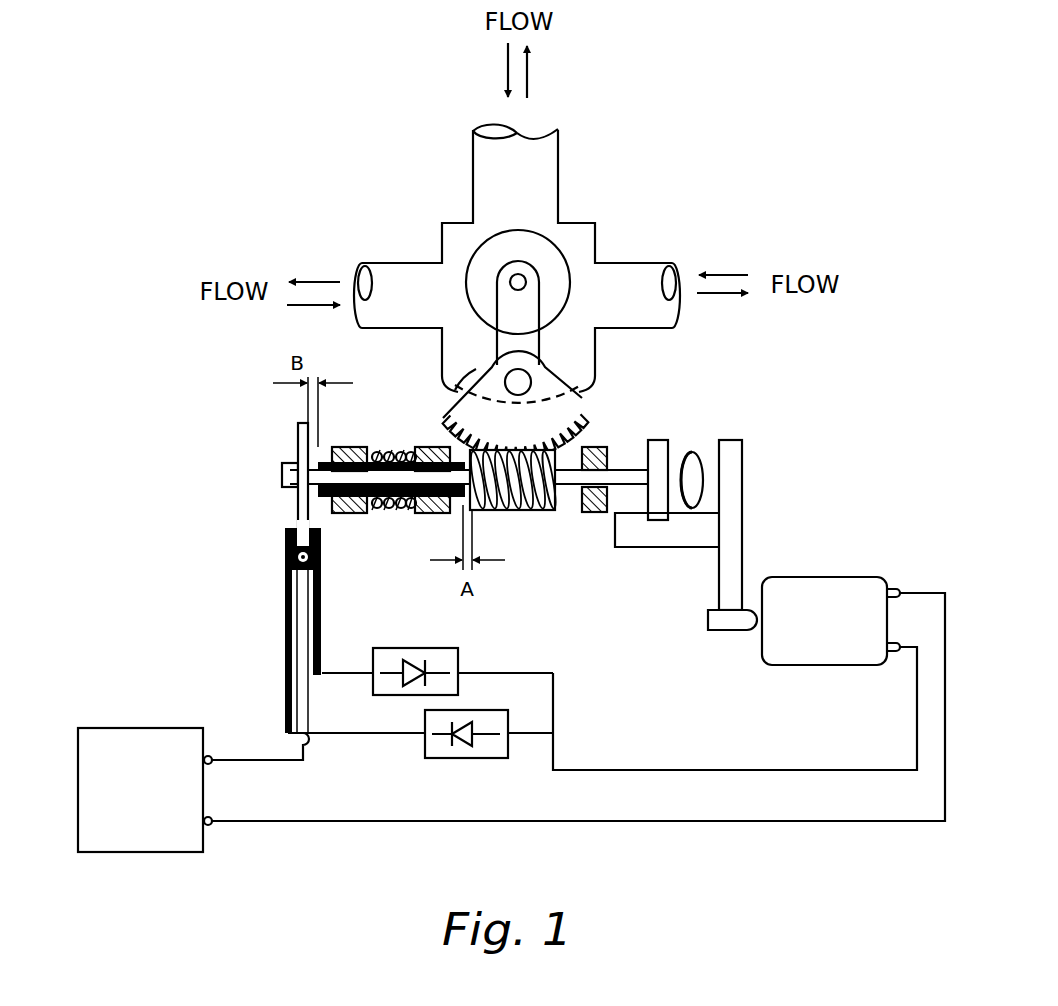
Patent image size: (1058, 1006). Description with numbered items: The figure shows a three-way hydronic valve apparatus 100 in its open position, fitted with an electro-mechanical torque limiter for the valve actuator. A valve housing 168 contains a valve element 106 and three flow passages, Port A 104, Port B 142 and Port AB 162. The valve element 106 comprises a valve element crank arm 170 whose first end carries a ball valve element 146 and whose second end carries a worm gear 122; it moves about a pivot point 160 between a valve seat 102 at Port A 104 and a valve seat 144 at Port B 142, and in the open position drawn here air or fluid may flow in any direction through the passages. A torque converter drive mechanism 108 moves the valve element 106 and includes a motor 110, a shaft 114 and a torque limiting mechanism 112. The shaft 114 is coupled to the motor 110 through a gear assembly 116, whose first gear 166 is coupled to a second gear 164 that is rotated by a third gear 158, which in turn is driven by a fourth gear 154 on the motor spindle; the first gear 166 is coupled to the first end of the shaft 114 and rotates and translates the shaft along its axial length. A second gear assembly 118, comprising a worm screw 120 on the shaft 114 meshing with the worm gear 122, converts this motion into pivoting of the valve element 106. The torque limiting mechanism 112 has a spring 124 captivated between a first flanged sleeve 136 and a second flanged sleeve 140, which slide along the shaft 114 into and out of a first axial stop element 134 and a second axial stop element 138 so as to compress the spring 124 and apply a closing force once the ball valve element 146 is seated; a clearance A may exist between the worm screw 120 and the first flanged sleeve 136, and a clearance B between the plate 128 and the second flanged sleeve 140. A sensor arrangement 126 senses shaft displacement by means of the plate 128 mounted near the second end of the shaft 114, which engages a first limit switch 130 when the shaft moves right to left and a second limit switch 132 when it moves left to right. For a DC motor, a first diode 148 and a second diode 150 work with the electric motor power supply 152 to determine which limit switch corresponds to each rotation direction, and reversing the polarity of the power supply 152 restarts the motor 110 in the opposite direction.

The three-way hydronic valve apparatus 100 is at (727, 90).
The valve seat 102 is at (438, 264).
The Port A 104 is at (356, 272).
The valve element 106 is at (573, 236).
The torque converter drive mechanism 108 is at (754, 425).
The motor 110 is at (828, 577).
The torque limiting mechanism 112 is at (388, 444).
The shaft 114 is at (648, 466).
The gear assembly 116 is at (695, 566).
The gear assembly 118 is at (553, 521).
The worm screw 120 is at (540, 537).
The worm gear 122 is at (575, 395).
The spring 124 is at (386, 510).
The sensor arrangement 126 is at (268, 529).
The plate 128 is at (298, 425).
The first limit switch 130 is at (285, 623).
The second limit switch 132 is at (322, 557).
The first axial stop element 134 is at (438, 441).
The first flanged sleeve 136 is at (457, 512).
The second axial stop element 138 is at (323, 403).
The second flanged sleeve 140 is at (322, 497).
The Port B 142 is at (661, 312).
The valve seat 144 is at (598, 263).
The ball valve element 146 is at (549, 240).
The first diode 148 is at (423, 755).
The second diode 150 is at (460, 660).
The electric motor power supply 152 is at (105, 853).
The fourth gear 154 is at (722, 632).
The third gear 158 is at (743, 470).
The pivot point 160 is at (454, 388).
The Port AB 162 is at (550, 100).
The second gear 164 is at (657, 548).
The first gear 166 is at (672, 445).
The valve housing 168 is at (576, 208).
The valve element crank arm 170 is at (495, 352).